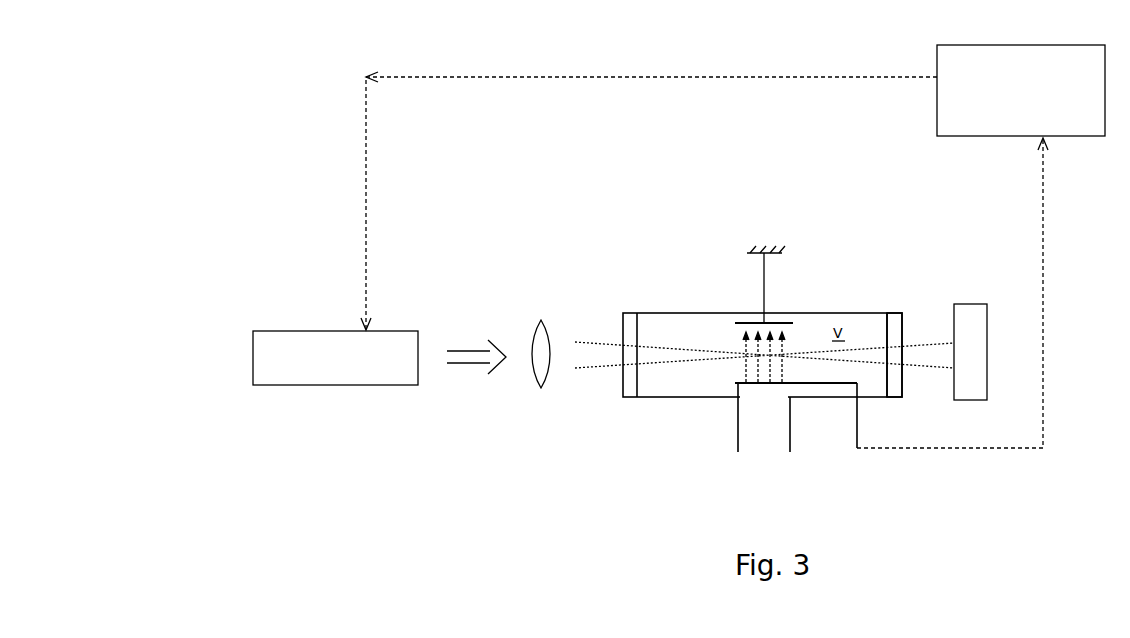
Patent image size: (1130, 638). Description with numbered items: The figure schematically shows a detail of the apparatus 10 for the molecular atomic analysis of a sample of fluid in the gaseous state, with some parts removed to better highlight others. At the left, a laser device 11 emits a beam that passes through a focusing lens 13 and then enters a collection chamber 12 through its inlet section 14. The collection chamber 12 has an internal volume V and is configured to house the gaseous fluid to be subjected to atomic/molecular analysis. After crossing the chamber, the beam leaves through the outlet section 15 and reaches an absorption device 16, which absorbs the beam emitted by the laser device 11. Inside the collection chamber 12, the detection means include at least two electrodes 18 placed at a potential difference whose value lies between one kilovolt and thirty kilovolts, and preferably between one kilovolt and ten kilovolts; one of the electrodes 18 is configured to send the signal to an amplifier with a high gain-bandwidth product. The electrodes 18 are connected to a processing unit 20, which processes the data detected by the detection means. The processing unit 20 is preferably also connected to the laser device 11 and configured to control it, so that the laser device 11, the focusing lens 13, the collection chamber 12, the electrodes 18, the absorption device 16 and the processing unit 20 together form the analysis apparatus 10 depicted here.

The apparatus 10 is at (270, 176).
The laser device 11 is at (342, 366).
The collection chamber 12 is at (680, 326).
The focusing lens 13 is at (532, 336).
The inlet section 14 is at (622, 357).
The outlet section 15 is at (903, 328).
The absorption device 16 is at (988, 352).
The electrodes 18 is at (783, 322).
The processing unit 20 is at (1034, 100).